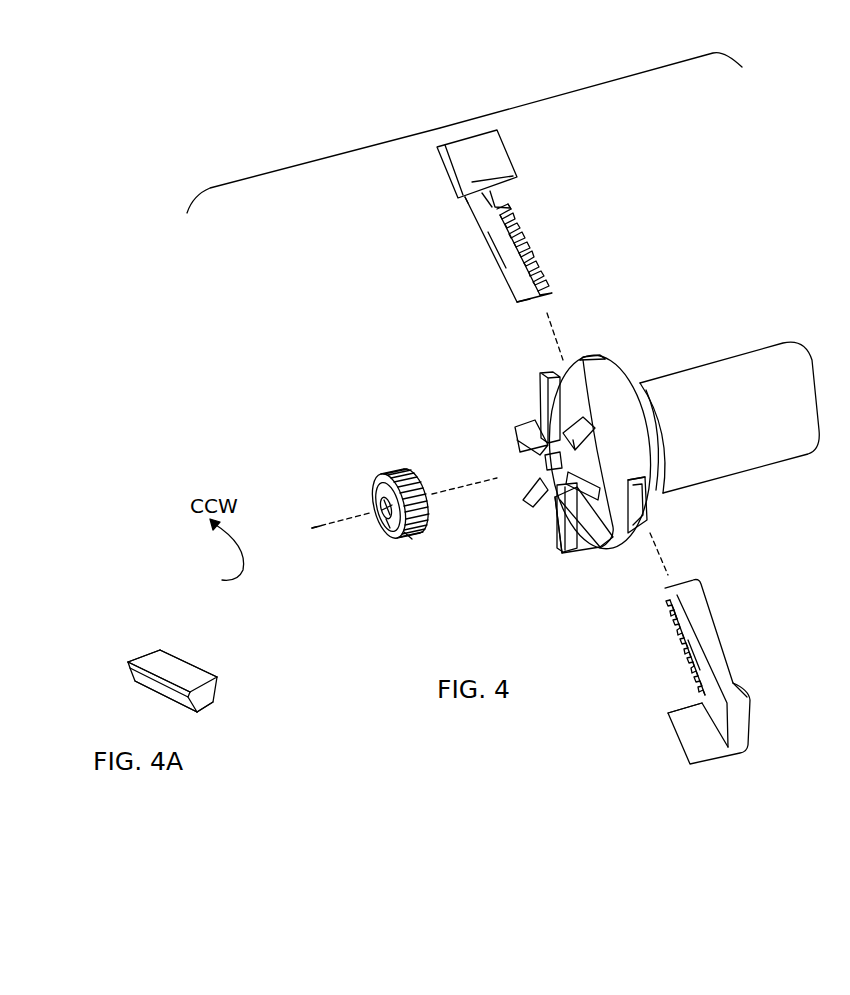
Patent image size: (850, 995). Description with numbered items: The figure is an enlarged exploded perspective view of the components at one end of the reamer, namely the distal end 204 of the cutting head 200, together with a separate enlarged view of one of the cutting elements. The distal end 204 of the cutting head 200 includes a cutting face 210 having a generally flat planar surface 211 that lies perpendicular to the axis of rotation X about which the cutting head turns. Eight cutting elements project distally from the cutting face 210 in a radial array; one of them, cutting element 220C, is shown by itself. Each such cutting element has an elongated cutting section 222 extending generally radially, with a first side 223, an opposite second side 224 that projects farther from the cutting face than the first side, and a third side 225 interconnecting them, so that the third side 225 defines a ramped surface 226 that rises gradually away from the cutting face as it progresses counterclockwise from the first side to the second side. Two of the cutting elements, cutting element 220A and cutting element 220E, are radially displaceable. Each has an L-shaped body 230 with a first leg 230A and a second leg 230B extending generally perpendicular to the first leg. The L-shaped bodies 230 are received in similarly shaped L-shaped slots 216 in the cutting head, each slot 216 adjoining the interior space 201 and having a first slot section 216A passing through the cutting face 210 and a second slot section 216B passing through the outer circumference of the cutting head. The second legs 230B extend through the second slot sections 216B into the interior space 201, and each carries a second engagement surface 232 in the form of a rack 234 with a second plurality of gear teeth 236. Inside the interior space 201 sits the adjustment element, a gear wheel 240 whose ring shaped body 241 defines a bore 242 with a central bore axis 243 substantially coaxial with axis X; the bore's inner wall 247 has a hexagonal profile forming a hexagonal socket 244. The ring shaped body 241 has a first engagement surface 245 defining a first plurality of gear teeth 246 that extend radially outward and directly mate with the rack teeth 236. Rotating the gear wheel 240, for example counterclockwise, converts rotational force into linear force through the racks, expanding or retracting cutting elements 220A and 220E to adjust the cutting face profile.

In FIG. 4, the cutting head 200 is at (470, 120).
In FIG. 4, the cutting element 220A is at (503, 158).
In FIG. 4, the L-shaped body 230 is at (520, 200).
In FIG. 4, the first leg 230A is at (463, 202).
In FIG. 4, the second leg 230B is at (492, 253).
In FIG. 4, the second engagement surface 232 is at (517, 230).
In FIG. 4, the rack 234 is at (493, 250).
In FIG. 4, the second plurality of gear teeth 236 is at (535, 262).
In FIG. 4, the L-shaped slot 216 is at (568, 364).
In FIG. 4, the distal end 204 is at (598, 387).
In FIG. 4, the interior space 201 is at (515, 430).
In FIG. 4, the cutting face 210 is at (593, 433).
In FIG. 4, the second slot section 216B is at (647, 483).
In FIG. 4, the first slot section 216A is at (613, 543).
In FIG. 4, the planar surface 211 is at (583, 535).
In FIG. 4, the gear wheel 240 is at (384, 507).
In FIG. 4, the ring shaped body 241 is at (380, 486).
In FIG. 4, the first plurality of gear teeth 246 is at (410, 475).
In FIG. 4, the inner wall 247 is at (385, 500).
In FIG. 4, the bore 242 is at (387, 511).
In FIG. 4, the central bore axis 243 is at (312, 528).
In FIG. 4, the hexagonal socket 244 is at (390, 528).
In FIG. 4, the first engagement surface 245 is at (410, 540).
In FIG. 4, the cutting element 220E is at (687, 732).
In FIG. 4A, the cutting element 220C is at (212, 697).
In FIG. 4A, the cutting section 222 is at (129, 664).
In FIG. 4A, the first side 223 is at (207, 712).
In FIG. 4A, the second side 224 is at (190, 672).
In FIG. 4A, the third side 225 is at (137, 680).
In FIG. 4A, the ramped surface 226 is at (150, 695).